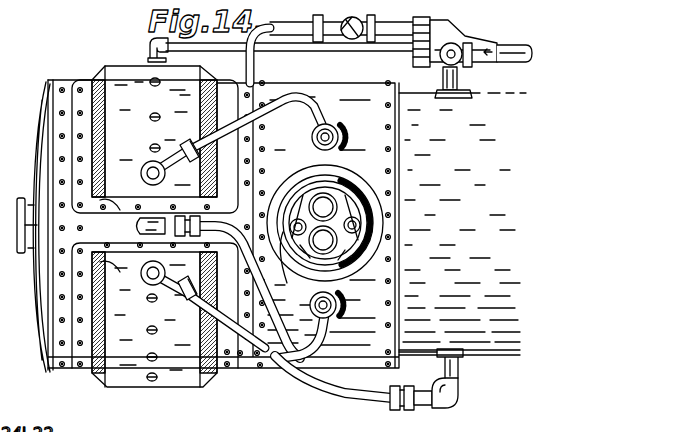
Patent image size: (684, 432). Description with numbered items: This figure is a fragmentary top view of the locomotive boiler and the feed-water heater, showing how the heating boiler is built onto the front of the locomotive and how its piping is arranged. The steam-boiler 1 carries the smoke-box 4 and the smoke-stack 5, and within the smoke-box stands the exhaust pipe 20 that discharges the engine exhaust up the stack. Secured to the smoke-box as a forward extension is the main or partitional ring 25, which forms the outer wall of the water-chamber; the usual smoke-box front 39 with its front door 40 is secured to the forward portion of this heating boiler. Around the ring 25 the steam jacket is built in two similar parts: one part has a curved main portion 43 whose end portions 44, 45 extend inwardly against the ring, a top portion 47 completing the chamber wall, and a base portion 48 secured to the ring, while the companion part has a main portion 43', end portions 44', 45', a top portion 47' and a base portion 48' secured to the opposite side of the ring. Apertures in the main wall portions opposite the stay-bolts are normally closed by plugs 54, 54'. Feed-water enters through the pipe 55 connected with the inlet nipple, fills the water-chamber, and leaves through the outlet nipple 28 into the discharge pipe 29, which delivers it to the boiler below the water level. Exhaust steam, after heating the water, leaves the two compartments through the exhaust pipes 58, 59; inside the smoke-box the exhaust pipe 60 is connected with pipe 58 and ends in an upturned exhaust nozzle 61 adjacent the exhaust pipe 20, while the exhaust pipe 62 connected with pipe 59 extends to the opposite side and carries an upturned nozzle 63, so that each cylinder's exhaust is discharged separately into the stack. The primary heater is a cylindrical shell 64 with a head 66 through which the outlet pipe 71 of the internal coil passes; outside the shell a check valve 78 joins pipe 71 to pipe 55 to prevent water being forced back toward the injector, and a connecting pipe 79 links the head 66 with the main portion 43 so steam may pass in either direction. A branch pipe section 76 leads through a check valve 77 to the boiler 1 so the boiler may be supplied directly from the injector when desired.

The steam-boiler 1 is at (488, 93).
The smoke-box 4 is at (356, 83).
The smoke-stack 5 is at (356, 193).
The exhaust pipe 20 is at (333, 198).
The main or partitional ring 25 is at (60, 112).
The outlet nipple 28 is at (133, 229).
The discharge pipe 29 is at (362, 398).
The smoke-box front 39 is at (50, 86).
The front door 40 is at (23, 285).
The main portion 43 is at (154, 117).
The main portion 43' is at (154, 334).
The end portion 44 is at (220, 124).
The end portion 44' is at (216, 332).
The end portion 45 is at (87, 119).
The end portion 45' is at (87, 328).
The top portion 47 is at (61, 189).
The top portion 47' is at (66, 302).
The base portion 48 is at (138, 126).
The base portion 48' is at (175, 327).
The plug 54 is at (139, 115).
The plug 54' is at (136, 337).
The pipe 55 is at (264, 60).
The exhaust pipe 58 is at (282, 112).
The exhaust pipe 59 is at (287, 362).
The exhaust pipe 60 is at (305, 187).
The upturned exhaust nozzle 61 is at (285, 270).
The exhaust pipe 62 is at (347, 263).
The upturned nozzle 63 is at (370, 222).
The cylindrical shell 64 is at (448, 40).
The head 66 is at (405, 60).
The outlet pipe 71 is at (370, 42).
The branch pipe section 76 is at (512, 50).
The check valve 77 is at (439, 67).
The check valve 78 is at (350, 40).
The connecting pipe 79 is at (150, 44).